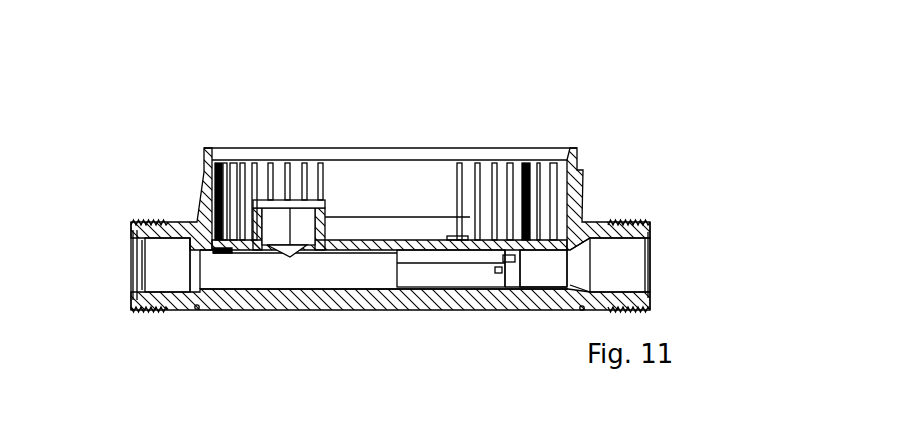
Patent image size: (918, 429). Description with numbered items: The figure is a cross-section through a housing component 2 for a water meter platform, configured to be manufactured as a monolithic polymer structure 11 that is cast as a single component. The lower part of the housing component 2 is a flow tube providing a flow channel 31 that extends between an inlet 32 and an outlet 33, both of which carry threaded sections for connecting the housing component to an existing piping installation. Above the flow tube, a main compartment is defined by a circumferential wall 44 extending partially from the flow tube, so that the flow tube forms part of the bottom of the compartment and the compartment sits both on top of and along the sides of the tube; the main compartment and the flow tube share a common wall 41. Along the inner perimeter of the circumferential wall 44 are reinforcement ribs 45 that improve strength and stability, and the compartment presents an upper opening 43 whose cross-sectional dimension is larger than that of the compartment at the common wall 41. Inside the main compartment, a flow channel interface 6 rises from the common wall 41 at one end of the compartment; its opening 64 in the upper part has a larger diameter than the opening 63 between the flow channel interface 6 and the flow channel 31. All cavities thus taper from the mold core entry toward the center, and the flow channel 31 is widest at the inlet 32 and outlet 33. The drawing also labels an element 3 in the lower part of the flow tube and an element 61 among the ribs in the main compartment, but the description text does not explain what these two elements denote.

The housing component 2 is at (724, 189).
The measuring insert 3 is at (465, 306).
The flow channel interface 6 is at (327, 217).
The monolithic polymer structure 11 is at (532, 306).
The flow channel 31 is at (254, 283).
The inlet 32 is at (131, 230).
The outlet 33 is at (650, 297).
The common wall 41 is at (402, 308).
The upper opening 43 is at (302, 163).
The circumferential wall 44 is at (447, 170).
The reinforcement ribs 45 is at (270, 163).
The cooling fins 61 is at (485, 163).
The opening 63 is at (305, 200).
The opening 64 is at (326, 199).